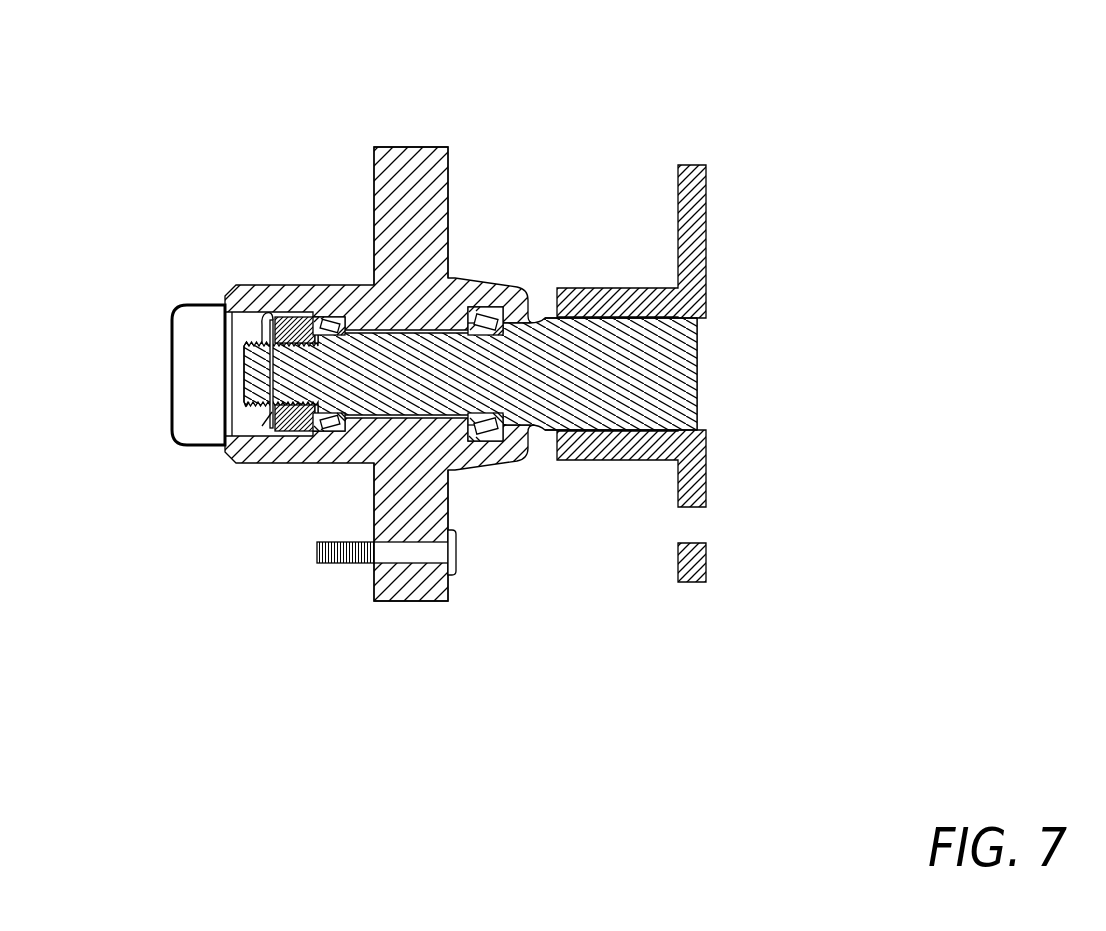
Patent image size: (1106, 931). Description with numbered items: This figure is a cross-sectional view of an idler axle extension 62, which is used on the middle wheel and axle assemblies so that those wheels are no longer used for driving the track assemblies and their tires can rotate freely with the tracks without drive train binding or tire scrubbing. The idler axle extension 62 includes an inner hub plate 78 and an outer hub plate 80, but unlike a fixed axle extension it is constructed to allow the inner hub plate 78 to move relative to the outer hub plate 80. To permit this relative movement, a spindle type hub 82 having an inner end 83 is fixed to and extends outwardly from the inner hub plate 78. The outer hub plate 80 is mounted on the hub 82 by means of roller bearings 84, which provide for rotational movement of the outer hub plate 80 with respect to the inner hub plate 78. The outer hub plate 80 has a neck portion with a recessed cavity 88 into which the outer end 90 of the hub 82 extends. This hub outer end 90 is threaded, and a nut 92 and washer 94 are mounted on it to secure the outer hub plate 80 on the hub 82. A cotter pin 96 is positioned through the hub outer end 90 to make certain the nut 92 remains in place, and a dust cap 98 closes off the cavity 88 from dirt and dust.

The idler axle extension 62 is at (240, 625).
The inner hub plate 78 is at (625, 287).
The outer hub plate 80 is at (406, 147).
The spindle type hub 82 is at (543, 318).
The inner end 83 is at (590, 375).
The roller bearings 84 is at (328, 317).
The recessed cavity 88 is at (250, 312).
The outer end 90 is at (257, 395).
The nut 92 is at (293, 420).
The washer 94 is at (285, 312).
The cotter pin 96 is at (232, 300).
The dust cap 98 is at (170, 334).